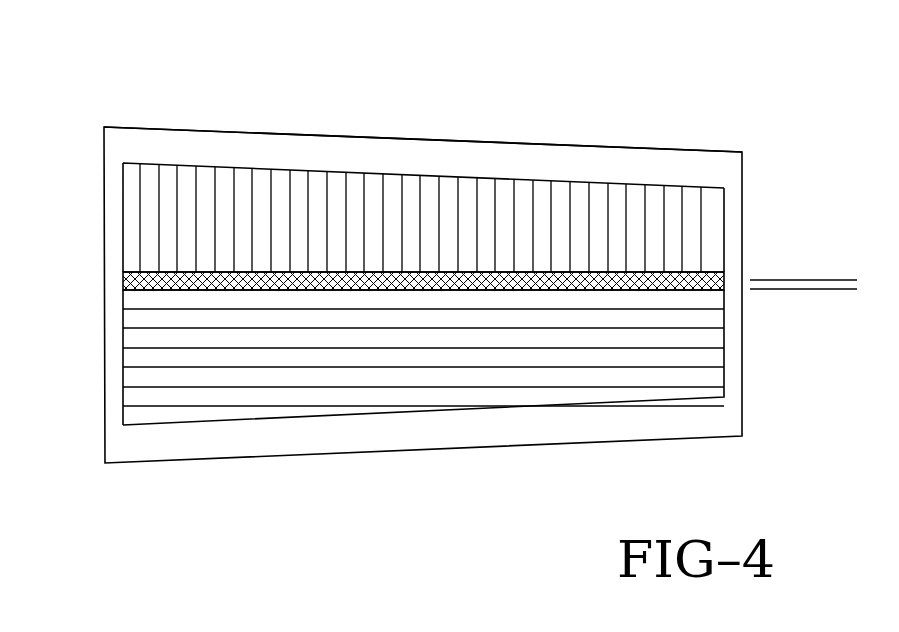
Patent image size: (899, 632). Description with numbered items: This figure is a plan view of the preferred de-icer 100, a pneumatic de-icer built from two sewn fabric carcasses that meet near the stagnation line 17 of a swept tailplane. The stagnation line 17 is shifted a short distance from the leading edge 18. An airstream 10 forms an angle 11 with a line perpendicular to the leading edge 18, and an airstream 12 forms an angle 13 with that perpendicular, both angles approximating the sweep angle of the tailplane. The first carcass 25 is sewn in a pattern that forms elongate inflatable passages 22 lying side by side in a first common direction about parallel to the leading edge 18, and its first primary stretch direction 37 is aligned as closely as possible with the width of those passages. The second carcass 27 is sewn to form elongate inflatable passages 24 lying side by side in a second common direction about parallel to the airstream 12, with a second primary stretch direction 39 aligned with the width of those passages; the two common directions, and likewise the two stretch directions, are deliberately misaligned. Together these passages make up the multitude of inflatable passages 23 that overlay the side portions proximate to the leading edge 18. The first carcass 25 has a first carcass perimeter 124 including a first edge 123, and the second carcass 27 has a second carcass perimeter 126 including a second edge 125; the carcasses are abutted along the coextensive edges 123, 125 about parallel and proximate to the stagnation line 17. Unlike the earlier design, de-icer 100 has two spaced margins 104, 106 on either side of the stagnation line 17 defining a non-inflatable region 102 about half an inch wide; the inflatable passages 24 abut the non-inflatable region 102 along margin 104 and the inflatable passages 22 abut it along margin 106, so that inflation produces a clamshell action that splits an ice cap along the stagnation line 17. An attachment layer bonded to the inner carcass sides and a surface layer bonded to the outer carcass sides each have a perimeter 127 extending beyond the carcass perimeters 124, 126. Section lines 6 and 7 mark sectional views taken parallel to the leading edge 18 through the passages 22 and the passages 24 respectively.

The de-icer 100 is at (651, 130).
The perimeter 127 is at (447, 137).
The second carcass perimeter 126 is at (725, 196).
The first carcass perimeter 124 is at (725, 384).
The second carcass 27 is at (165, 204).
The inflatable passages 24 is at (728, 218).
The non-inflatable region 102 is at (123, 285).
The spaced margin 104 is at (150, 270).
The spaced margin 106 is at (165, 291).
The first edge 123 is at (694, 293).
The second edge 125 is at (690, 280).
The first carcass 25 is at (170, 378).
The inflatable passages 22 is at (728, 352).
The inflatable passages 23 is at (125, 219).
The stagnation line 17 is at (846, 281).
The leading edge 18 is at (846, 290).
The sectional view 7 is at (430, 229).
The sectional view 6 is at (437, 358).
The airstream 10 is at (565, 490).
The airstream 12 is at (376, 200).
The angle 13 is at (400, 45).
The angle 11 is at (372, 495).
The second primary stretch direction 39 is at (252, 228).
The first primary stretch direction 37 is at (221, 320).